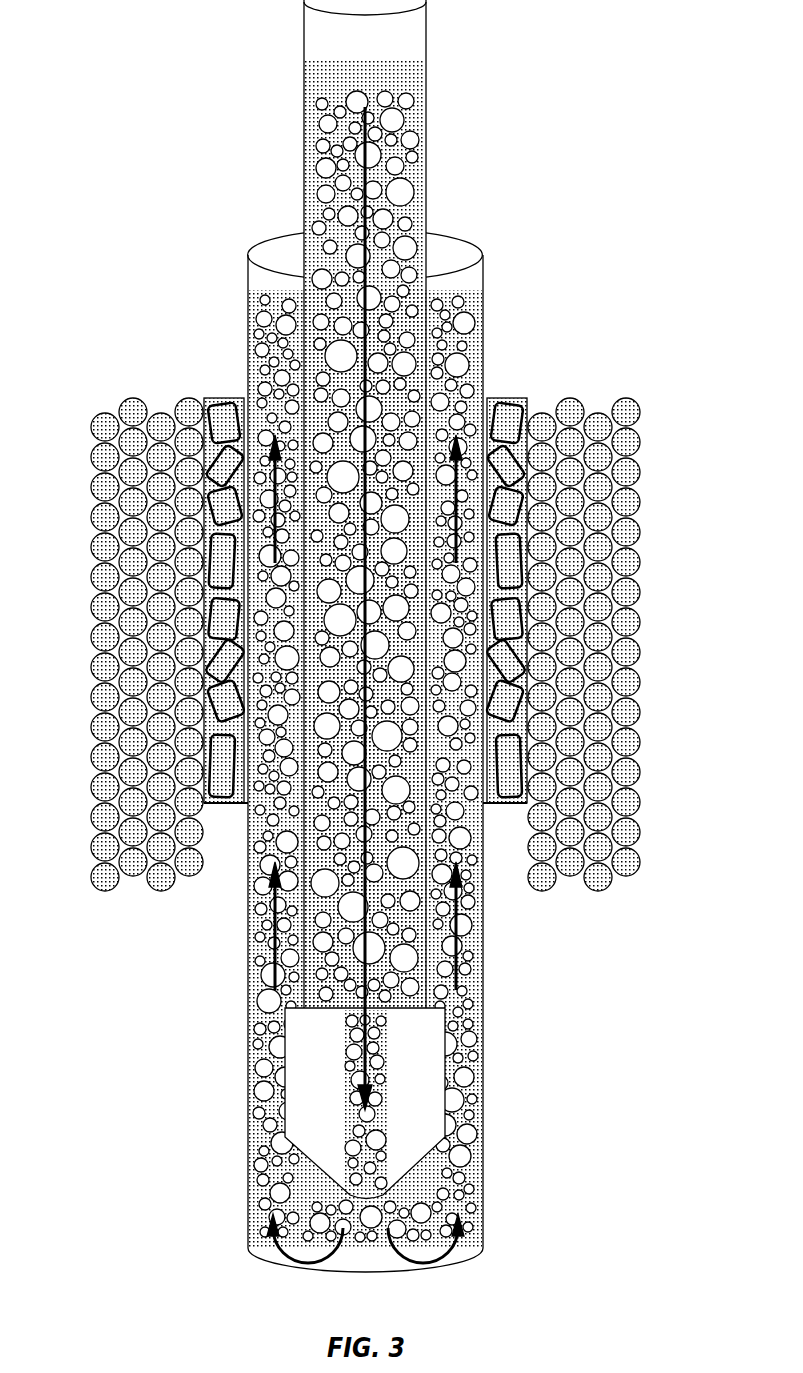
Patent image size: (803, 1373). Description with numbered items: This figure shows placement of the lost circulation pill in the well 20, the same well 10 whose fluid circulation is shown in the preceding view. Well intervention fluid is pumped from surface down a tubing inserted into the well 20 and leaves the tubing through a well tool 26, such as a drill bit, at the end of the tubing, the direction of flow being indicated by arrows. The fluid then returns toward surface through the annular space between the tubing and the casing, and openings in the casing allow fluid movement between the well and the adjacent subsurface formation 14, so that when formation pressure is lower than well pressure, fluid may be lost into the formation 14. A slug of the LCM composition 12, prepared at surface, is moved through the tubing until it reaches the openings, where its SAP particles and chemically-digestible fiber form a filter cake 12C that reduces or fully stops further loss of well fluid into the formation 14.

The well 10 is at (340, 147).
The LCM composition 12 is at (212, 397).
The filter cake 12C is at (228, 805).
The subsurface formation 14 is at (92, 520).
The well 20 is at (588, 238).
The well tool 26 is at (483, 1120).